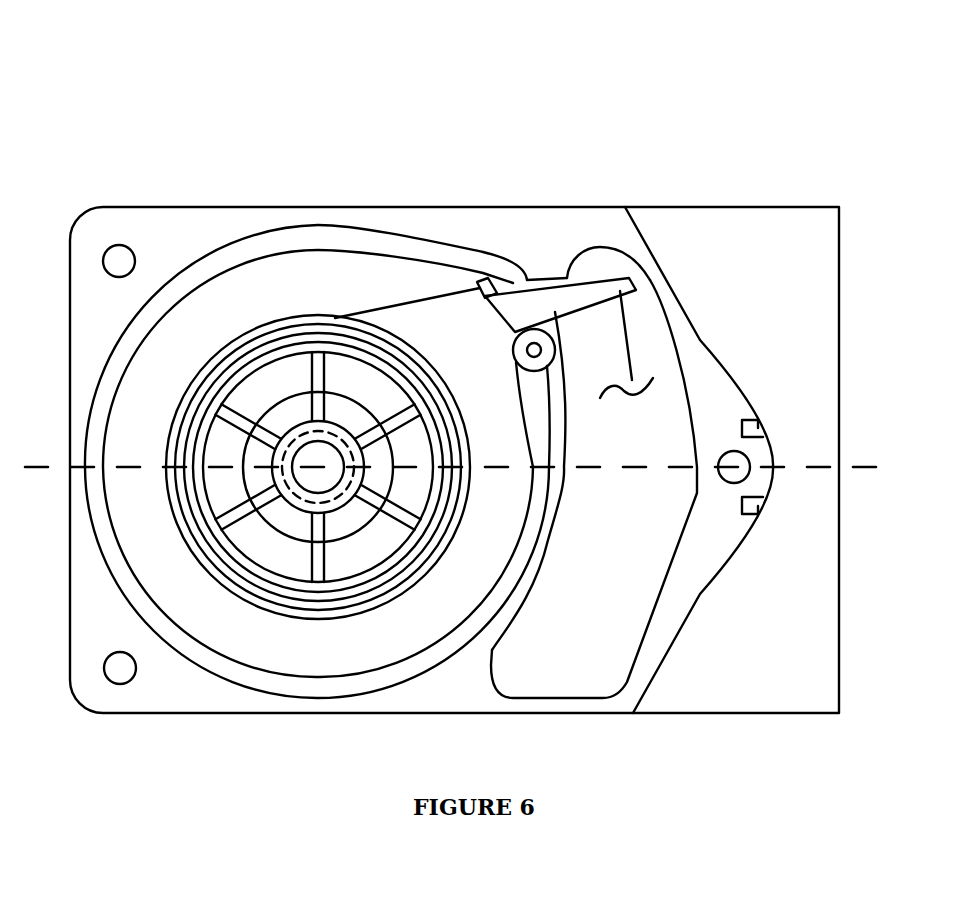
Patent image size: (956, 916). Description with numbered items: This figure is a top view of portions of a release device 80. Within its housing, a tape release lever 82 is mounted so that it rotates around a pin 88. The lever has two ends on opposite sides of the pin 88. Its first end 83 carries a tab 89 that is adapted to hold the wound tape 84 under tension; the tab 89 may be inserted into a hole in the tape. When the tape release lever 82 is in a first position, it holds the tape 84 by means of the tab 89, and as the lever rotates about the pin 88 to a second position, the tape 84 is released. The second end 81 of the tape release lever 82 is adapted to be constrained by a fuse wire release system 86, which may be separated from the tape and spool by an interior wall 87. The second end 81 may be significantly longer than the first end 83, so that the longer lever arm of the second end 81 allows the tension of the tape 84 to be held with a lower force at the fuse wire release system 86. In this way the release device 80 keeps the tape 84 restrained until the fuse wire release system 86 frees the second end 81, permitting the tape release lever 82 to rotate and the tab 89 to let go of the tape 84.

The release device 80 is at (240, 207).
The second end 81 is at (573, 272).
The tape release lever 82 is at (491, 309).
The first end 83 is at (508, 280).
The wound tape 84 is at (408, 300).
The fuse wire release system 86 is at (628, 337).
The interior wall 87 is at (512, 618).
The pin 88 is at (545, 385).
The tab 89 is at (478, 292).